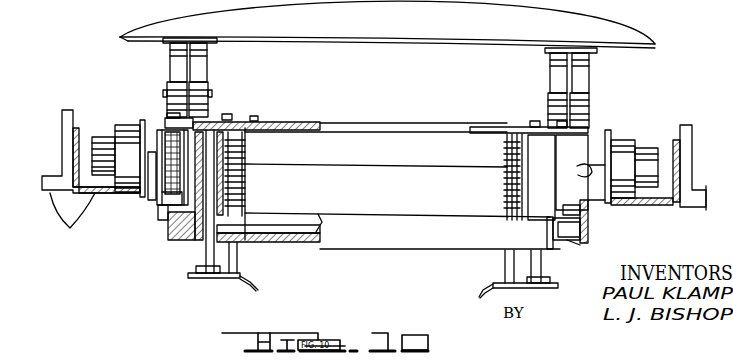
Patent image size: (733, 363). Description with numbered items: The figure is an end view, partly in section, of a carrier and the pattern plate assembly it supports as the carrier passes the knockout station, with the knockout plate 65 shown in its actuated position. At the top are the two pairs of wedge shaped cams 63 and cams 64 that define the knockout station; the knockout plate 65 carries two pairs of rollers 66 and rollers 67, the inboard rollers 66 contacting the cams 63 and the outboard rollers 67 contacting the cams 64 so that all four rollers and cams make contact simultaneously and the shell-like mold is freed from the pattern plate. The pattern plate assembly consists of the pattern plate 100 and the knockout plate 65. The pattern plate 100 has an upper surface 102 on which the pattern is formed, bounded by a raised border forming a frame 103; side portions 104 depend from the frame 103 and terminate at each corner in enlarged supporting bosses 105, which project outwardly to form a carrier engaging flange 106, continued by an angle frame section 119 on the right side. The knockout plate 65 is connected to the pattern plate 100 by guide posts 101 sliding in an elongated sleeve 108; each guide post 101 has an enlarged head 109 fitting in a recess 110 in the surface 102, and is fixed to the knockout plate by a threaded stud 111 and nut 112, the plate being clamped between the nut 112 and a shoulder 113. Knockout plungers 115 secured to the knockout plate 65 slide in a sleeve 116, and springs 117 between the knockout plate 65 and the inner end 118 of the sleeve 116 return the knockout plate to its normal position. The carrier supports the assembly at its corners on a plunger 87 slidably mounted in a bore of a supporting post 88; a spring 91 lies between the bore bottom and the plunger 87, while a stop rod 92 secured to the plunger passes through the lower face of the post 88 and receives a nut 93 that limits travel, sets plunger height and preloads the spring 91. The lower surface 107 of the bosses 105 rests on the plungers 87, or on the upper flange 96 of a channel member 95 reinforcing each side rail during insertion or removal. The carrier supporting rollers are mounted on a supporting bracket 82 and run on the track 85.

The wedge shaped cams 63 is at (205, 60).
The wedge shaped cams 64 is at (172, 60).
The knockout plate 65 is at (399, 126).
The rollers 66 is at (205, 84).
The rollers 67 is at (170, 84).
The supporting bracket 82 is at (597, 208).
The track 85 is at (137, 197).
The plunger 87 is at (160, 205).
The supporting post 88 is at (248, 162).
The spring 91 is at (160, 128).
The stop rod 92 is at (157, 120).
The nut 93 is at (165, 112).
The channel member 95 is at (592, 150).
The upper flange 96 is at (545, 220).
The pattern plate 100 is at (355, 250).
The guide posts 101 is at (222, 256).
The upper surface 102 is at (295, 244).
The frame 103 is at (192, 245).
The side portions 104 is at (180, 242).
The supporting bosses 105 is at (168, 230).
The carrier engaging flange 106 is at (176, 240).
The lower surface 107 is at (165, 212).
The elongated sleeve 108 is at (258, 124).
The enlarged head 109 is at (210, 280).
The recess 110 is at (216, 246).
The threaded stud 111 is at (205, 118).
The nut 112 is at (226, 114).
The shoulder 113 is at (247, 121).
The knockout plungers 115 is at (244, 198).
The sleeve 116 is at (250, 228).
The springs 117 is at (247, 150).
The inner end 118 is at (250, 216).
The angle frame section 119 is at (548, 233).